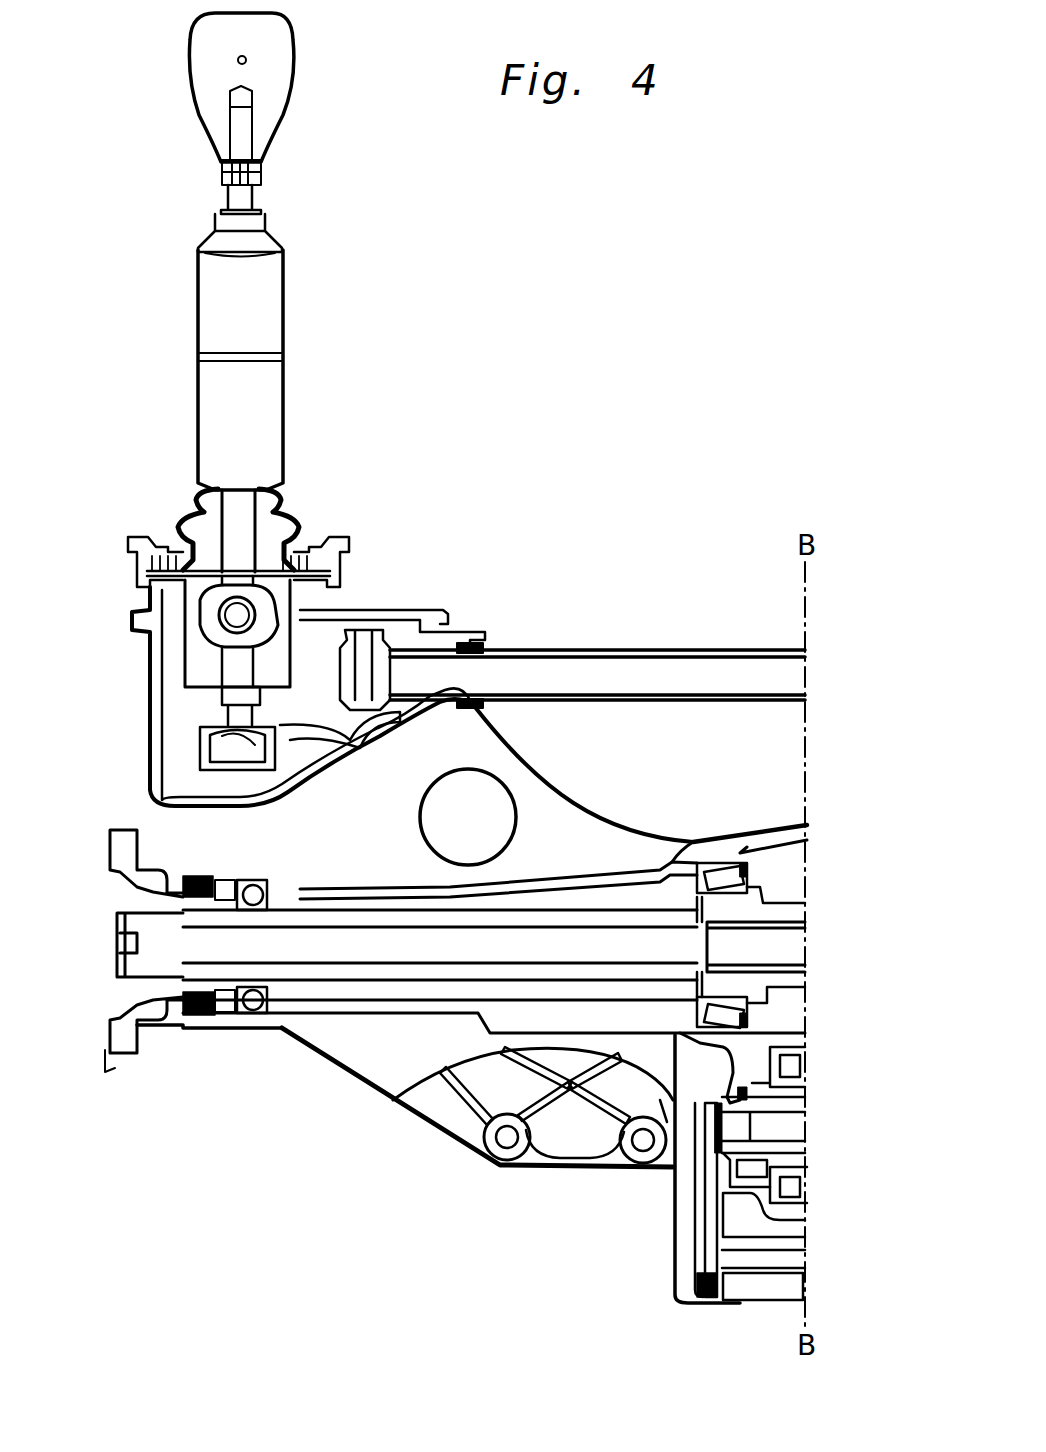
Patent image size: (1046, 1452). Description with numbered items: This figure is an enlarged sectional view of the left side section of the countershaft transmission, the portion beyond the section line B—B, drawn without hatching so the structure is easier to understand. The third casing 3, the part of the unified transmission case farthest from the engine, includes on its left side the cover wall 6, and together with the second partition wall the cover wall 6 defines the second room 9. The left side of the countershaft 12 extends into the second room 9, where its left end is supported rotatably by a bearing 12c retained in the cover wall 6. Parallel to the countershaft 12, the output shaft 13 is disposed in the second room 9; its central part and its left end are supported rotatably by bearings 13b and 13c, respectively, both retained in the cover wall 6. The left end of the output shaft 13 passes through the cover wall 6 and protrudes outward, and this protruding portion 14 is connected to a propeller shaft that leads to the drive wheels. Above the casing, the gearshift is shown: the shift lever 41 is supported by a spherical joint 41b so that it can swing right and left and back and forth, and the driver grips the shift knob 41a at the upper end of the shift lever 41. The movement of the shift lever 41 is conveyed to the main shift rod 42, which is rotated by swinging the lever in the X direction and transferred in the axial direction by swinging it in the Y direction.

The shift knob 41a is at (273, 115).
The shift lever 41 is at (272, 318).
The spherical joint 41b is at (265, 610).
The main shift rod 42 is at (620, 680).
The third casing 3 is at (788, 823).
The output shaft 13 is at (533, 920).
The bearing 13b is at (723, 883).
The bearing 13c is at (258, 882).
The second room 9 is at (790, 868).
The protruding portion 14 is at (120, 1030).
The cover wall 6 is at (722, 1067).
The countershaft 12 is at (795, 1140).
The bearing 12c is at (795, 1187).